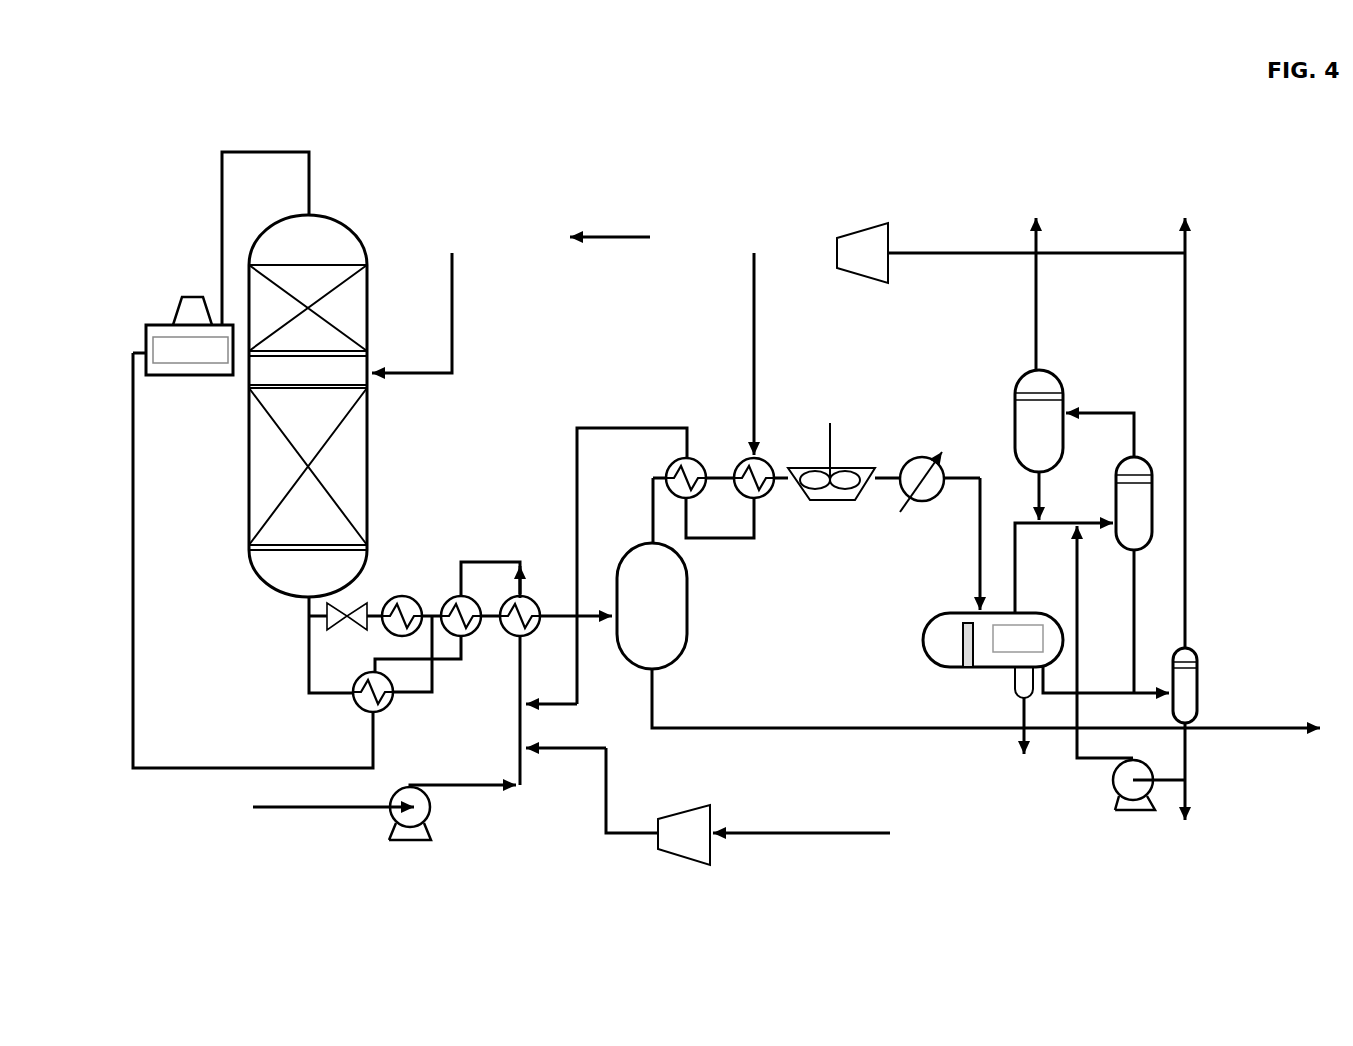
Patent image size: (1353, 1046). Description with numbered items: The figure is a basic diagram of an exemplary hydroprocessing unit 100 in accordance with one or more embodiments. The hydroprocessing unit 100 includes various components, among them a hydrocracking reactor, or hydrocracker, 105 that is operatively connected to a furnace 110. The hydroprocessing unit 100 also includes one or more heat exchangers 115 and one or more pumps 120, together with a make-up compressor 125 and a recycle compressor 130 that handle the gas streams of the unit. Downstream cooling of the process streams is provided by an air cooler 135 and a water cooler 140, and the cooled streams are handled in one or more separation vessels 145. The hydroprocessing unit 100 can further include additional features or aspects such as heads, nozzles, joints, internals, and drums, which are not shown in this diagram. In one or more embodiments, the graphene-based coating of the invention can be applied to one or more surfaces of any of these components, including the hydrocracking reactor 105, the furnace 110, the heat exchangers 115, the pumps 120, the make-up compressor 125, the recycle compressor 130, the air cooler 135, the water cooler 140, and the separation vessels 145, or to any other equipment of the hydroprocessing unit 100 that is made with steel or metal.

The hydroprocessing unit 100 is at (691, 467).
The hydrocracking reactor 105 is at (310, 287).
The furnace 110 is at (193, 337).
The heat exchanger 115 is at (457, 593).
The pump 120 is at (432, 832).
The make-up compressor 125 is at (680, 835).
The recycle compressor 130 is at (865, 253).
The air cooler 135 is at (800, 468).
The water cooler 140 is at (910, 483).
The separation vessel 145 is at (680, 620).